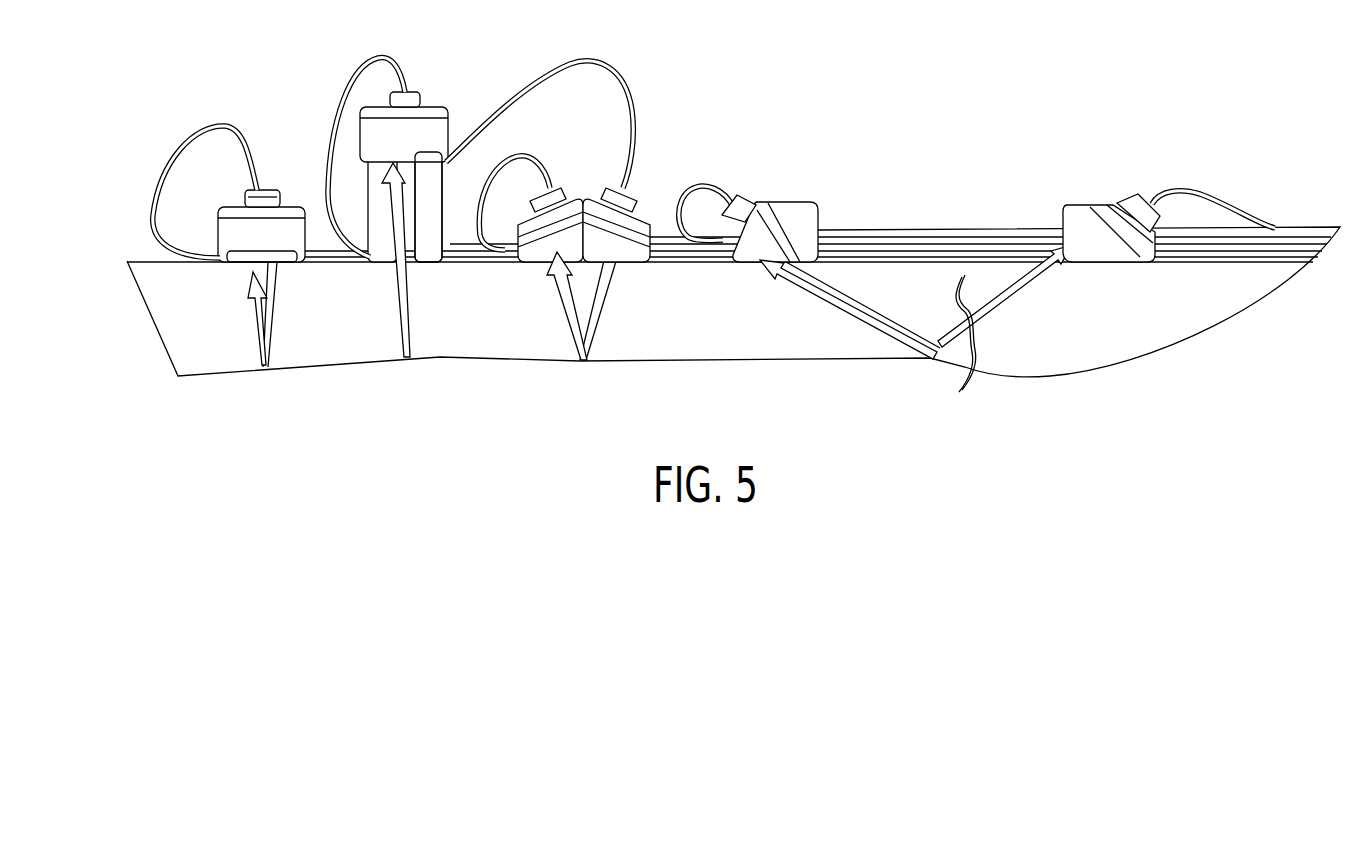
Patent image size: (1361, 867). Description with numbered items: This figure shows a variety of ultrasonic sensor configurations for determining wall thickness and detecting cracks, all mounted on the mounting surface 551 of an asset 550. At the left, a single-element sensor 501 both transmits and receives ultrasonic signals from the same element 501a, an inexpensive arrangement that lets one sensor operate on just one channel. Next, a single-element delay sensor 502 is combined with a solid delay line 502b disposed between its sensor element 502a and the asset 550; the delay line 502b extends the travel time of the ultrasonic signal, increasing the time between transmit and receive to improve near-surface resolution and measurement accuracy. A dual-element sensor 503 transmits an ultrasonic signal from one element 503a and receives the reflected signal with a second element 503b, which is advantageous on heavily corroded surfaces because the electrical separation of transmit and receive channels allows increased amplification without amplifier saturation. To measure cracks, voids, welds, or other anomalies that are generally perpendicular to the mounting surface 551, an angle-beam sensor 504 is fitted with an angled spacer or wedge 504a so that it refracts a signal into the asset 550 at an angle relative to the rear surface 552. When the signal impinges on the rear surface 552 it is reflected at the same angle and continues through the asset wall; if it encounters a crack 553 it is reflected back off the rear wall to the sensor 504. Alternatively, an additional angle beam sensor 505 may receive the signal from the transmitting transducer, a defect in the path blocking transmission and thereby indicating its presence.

The single-element sensor 501 is at (283, 205).
The element 501a is at (247, 250).
The single-element delay sensor 502 is at (428, 98).
The sensor element 502a is at (446, 142).
The delay line 502b is at (443, 215).
The dual-element sensor 503 is at (636, 197).
The element 503a is at (640, 240).
The second element 503b is at (557, 210).
The angle-beam sensor 504 is at (797, 203).
The angled spacer (wedge) 504a is at (807, 220).
The additional angle beam sensor 505 is at (1080, 207).
The asset 550 is at (487, 360).
The mounting surface 551 is at (908, 260).
The rear surface 552 is at (873, 363).
The crack 553 is at (961, 353).